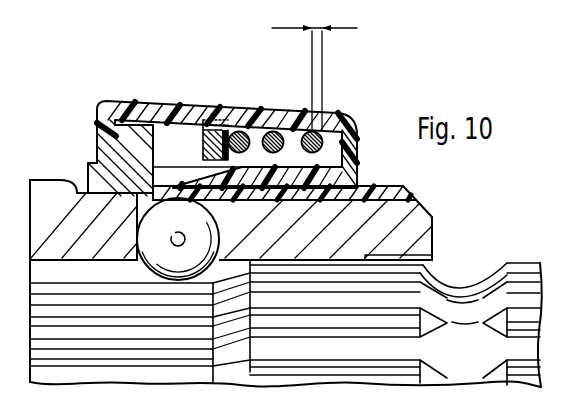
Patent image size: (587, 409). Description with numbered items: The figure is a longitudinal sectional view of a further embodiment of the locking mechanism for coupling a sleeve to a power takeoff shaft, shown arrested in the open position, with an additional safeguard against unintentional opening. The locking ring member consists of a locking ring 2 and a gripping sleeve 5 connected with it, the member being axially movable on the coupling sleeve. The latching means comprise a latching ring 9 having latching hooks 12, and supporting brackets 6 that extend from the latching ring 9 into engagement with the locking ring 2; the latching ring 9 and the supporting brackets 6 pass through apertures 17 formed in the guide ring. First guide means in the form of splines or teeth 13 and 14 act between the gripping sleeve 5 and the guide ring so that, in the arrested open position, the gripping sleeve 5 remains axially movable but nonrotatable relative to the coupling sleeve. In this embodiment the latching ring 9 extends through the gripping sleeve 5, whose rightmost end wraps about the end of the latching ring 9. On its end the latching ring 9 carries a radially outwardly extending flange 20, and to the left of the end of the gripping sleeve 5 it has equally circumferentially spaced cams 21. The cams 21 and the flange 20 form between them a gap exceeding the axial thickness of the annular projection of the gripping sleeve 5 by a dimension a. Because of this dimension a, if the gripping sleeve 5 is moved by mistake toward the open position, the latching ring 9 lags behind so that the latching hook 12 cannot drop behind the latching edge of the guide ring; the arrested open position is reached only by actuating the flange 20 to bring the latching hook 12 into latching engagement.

The locking ring 2 is at (117, 165).
The gripping sleeve 5 is at (247, 117).
The supporting brackets 6 is at (171, 173).
The latching ring 9 is at (266, 134).
The latching hooks 12 is at (203, 180).
The splines or teeth 13 is at (212, 110).
The splines or teeth 14 is at (218, 112).
The apertures 17 is at (215, 120).
The radially outwardly extending flange 20 is at (362, 140).
The cams 21 is at (298, 128).
The dimension a is at (314, 70).